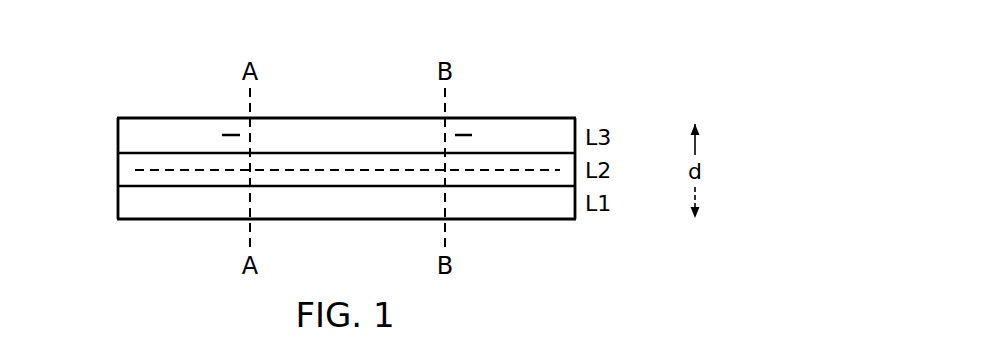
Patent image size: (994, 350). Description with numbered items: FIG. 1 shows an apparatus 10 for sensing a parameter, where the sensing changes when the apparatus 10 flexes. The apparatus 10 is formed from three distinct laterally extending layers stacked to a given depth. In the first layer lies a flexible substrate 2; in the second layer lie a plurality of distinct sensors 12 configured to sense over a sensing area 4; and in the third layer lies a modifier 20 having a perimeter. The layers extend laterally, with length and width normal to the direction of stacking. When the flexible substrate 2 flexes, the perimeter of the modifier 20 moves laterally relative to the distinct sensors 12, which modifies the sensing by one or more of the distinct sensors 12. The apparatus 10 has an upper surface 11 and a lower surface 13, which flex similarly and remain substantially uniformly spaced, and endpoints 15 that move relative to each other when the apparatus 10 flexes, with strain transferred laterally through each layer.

The flexible substrate 2 is at (118, 203).
The sensing area 4 is at (126, 87).
The apparatus 10 is at (691, 64).
The upper surface 11 is at (378, 118).
The distinct sensors 12 is at (157, 170).
The lower surface 13 is at (383, 220).
The endpoints 15 is at (116, 236).
The modifier 20 is at (229, 135).